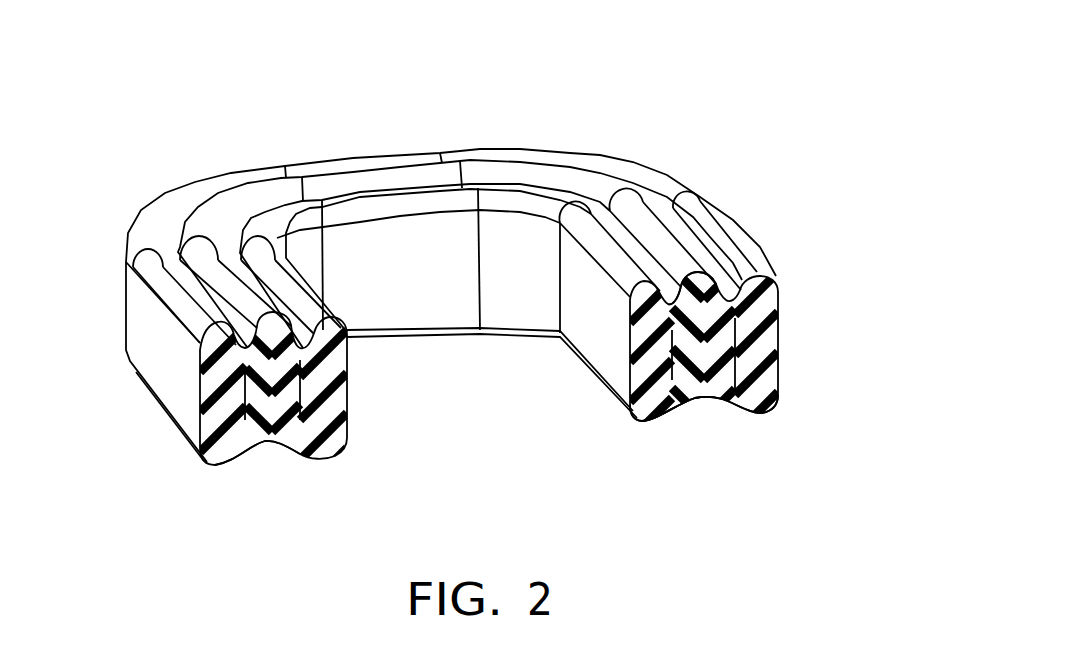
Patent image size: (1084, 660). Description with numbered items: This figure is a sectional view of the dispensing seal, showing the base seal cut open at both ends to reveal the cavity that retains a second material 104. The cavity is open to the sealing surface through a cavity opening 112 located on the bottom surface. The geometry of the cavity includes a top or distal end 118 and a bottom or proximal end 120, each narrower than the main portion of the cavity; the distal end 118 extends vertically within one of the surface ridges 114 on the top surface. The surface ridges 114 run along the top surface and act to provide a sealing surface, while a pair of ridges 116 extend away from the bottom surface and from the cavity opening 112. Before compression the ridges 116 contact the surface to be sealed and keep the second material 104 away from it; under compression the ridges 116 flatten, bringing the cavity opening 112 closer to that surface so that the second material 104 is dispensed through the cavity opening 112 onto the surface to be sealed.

The second material 104 is at (512, 322).
The cavity opening 112 is at (468, 489).
The surface ridges 114 is at (445, 200).
The ridges 116 is at (688, 458).
The distal end 118 is at (765, 270).
The proximal end 120 is at (725, 461).